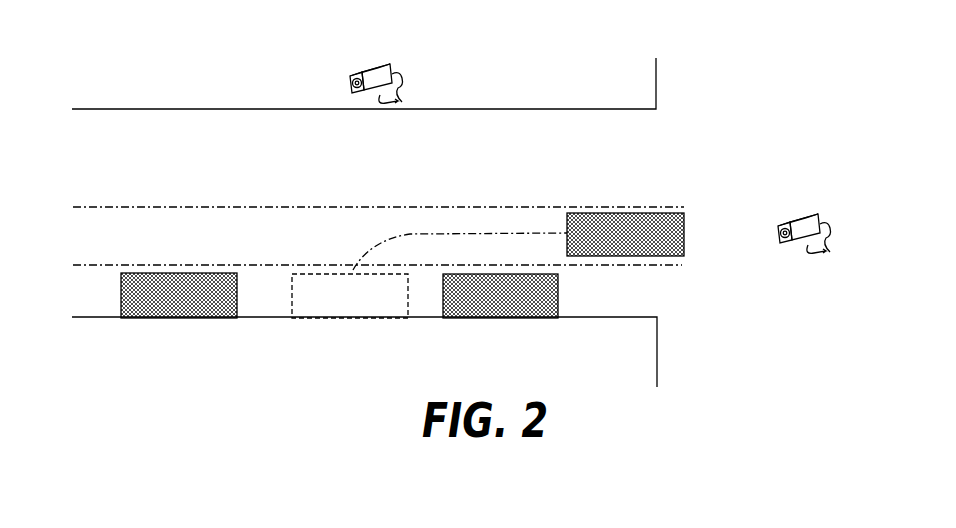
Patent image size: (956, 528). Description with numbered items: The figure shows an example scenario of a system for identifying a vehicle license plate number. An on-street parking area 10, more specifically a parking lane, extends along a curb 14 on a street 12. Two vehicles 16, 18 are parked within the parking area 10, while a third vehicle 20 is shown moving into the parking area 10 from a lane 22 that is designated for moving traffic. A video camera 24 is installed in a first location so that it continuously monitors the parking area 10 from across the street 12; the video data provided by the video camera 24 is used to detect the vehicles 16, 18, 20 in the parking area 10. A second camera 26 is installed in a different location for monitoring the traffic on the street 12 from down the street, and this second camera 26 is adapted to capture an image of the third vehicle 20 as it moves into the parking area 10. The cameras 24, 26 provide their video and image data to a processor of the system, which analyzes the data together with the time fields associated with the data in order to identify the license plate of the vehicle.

The on-street parking area 10 is at (576, 292).
The street 12 is at (153, 194).
The curb 14 is at (263, 318).
The vehicle 16 is at (175, 300).
The vehicle 18 is at (500, 300).
The third vehicle 20 is at (348, 299).
The lane 22 is at (180, 143).
The video camera 24 is at (380, 62).
The second camera 26 is at (808, 218).